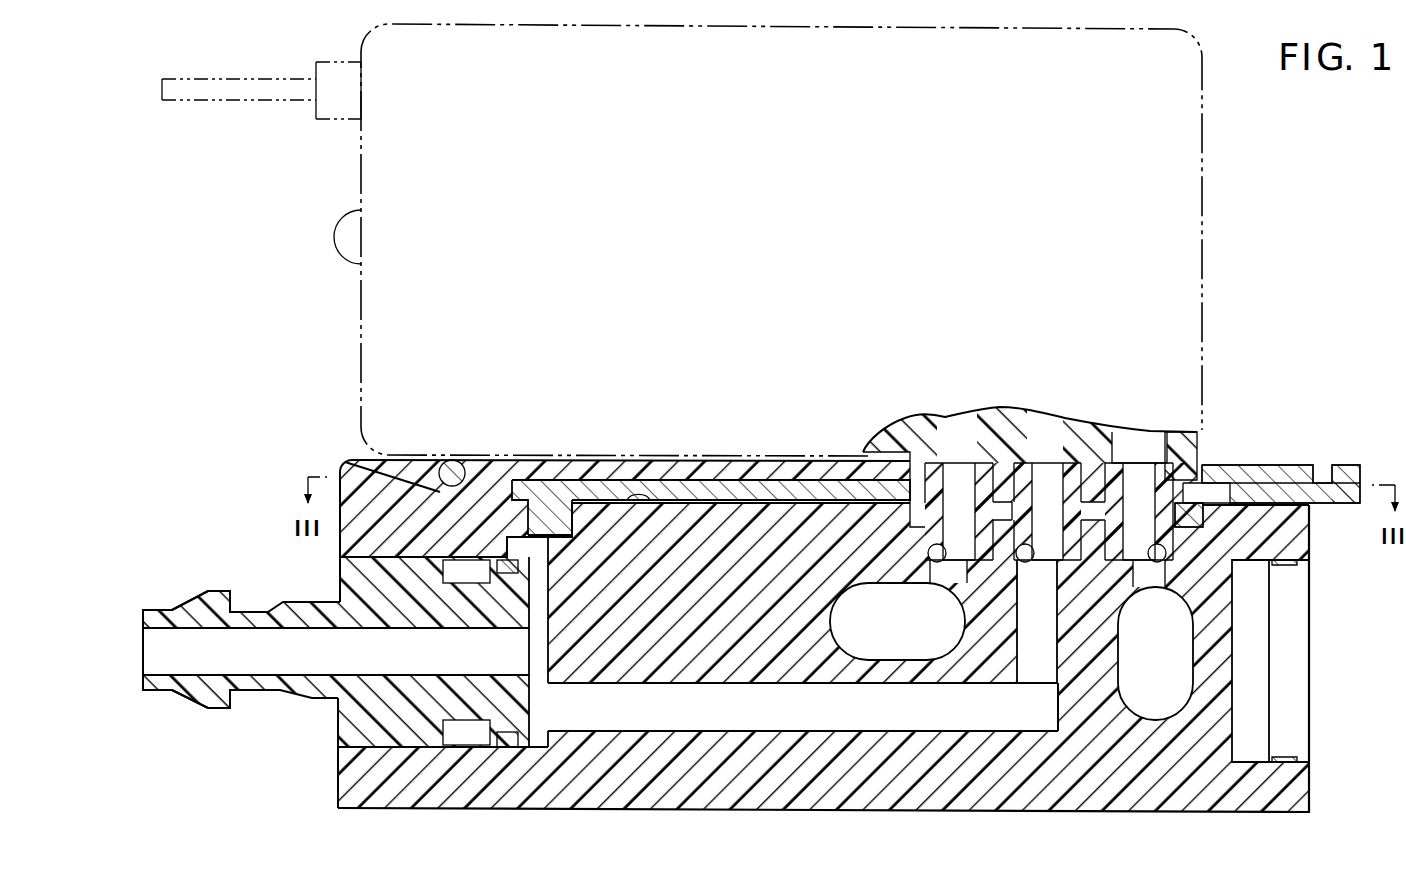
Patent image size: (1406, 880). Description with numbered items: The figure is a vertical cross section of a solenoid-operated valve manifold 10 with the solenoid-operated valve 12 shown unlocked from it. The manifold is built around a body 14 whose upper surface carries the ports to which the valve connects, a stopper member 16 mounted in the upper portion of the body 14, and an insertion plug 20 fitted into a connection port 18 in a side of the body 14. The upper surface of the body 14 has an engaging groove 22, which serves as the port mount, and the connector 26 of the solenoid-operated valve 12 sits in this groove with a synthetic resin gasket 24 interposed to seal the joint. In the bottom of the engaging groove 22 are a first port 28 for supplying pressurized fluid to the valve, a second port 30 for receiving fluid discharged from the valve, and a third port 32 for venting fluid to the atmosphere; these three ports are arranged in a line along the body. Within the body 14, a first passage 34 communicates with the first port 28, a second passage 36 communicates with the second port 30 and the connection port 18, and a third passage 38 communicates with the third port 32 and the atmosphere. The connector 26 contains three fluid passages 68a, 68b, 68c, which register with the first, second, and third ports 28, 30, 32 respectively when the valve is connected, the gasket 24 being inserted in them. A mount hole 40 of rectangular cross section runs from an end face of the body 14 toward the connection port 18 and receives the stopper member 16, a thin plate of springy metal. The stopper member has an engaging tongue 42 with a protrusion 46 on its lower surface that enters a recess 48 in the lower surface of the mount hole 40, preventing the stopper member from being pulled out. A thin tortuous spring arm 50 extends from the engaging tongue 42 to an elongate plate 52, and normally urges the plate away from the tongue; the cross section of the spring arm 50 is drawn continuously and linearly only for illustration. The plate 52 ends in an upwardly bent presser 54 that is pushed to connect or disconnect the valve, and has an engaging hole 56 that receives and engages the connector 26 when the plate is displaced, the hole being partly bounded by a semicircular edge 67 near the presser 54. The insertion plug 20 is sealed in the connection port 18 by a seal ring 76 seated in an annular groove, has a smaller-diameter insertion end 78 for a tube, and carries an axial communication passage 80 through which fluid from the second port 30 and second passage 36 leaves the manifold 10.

The solenoid-operated valve manifold 10 is at (250, 513).
The solenoid-operated valve 12 is at (1205, 328).
The body 14 is at (1314, 789).
The stopper member 16 is at (1364, 468).
The connection port 18 is at (535, 745).
The insertion plug 20 is at (308, 700).
The engaging groove 22 is at (1215, 512).
The gasket 24 is at (1138, 480).
The connector 26 is at (1183, 452).
The first port 28 is at (1150, 578).
The second port 30 is at (1040, 560).
The third port 32 is at (952, 562).
The first passage 34 is at (1177, 672).
The second passage 36 is at (990, 710).
The third passage 38 is at (870, 616).
The mount hole 40 is at (657, 498).
The engaging tongue 42 is at (543, 492).
The protrusion 46 is at (556, 522).
The recess 48 is at (560, 526).
The spring arm 50 is at (680, 490).
The plate 52 is at (1290, 492).
The presser 54 is at (1345, 476).
The engaging hole 56 is at (1205, 493).
The semicircular edge 67 is at (1250, 474).
The fluid passage 68a is at (1137, 483).
The fluid passage 68b is at (1052, 477).
The fluid passage 68c is at (960, 477).
The seal ring 76 is at (508, 733).
The insertion end 78 is at (218, 602).
The communication passage 80 is at (186, 645).